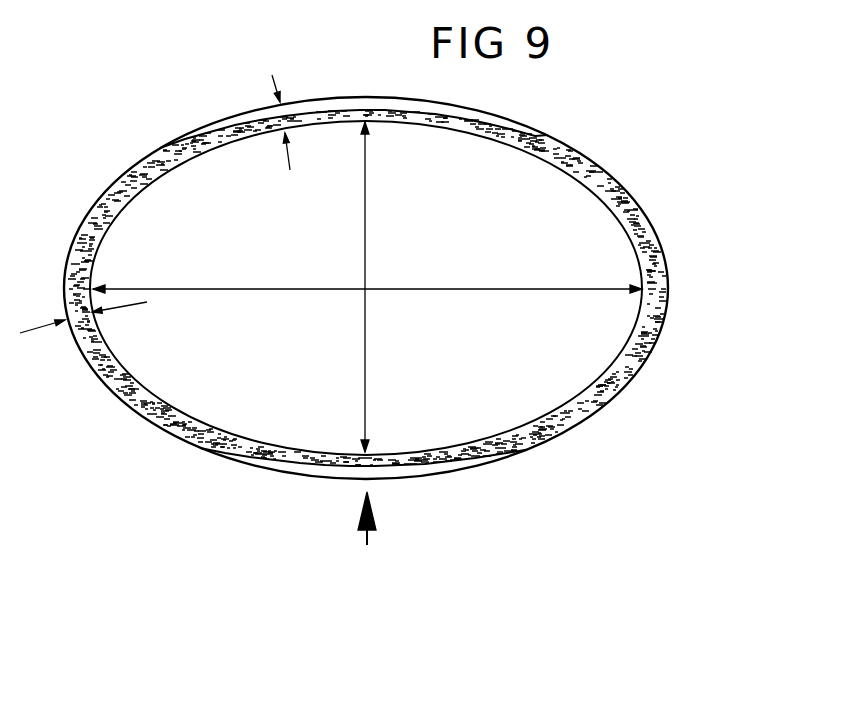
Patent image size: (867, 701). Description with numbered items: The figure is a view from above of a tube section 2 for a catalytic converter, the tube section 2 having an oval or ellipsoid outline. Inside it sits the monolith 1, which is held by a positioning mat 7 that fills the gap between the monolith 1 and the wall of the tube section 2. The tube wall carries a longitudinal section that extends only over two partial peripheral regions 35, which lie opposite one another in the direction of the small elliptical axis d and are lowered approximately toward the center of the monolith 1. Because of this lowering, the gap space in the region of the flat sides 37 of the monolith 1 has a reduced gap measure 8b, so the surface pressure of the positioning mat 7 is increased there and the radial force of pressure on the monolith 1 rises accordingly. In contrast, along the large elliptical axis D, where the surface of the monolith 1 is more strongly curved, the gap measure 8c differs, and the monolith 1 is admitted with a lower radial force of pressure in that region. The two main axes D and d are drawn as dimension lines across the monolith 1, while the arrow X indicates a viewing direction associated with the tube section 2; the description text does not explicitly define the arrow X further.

The monolith 1 is at (612, 255).
The tube section 2 is at (386, 291).
The positioning mat 7 is at (137, 168).
The reduced gap measure 8b is at (270, 128).
The gap measure 8c is at (75, 335).
The partial peripheral regions 35 is at (332, 112).
The flat sides 37 is at (412, 125).
The large elliptical axis D is at (430, 289).
The small elliptical axis d is at (365, 317).
The direction arrow X is at (365, 540).